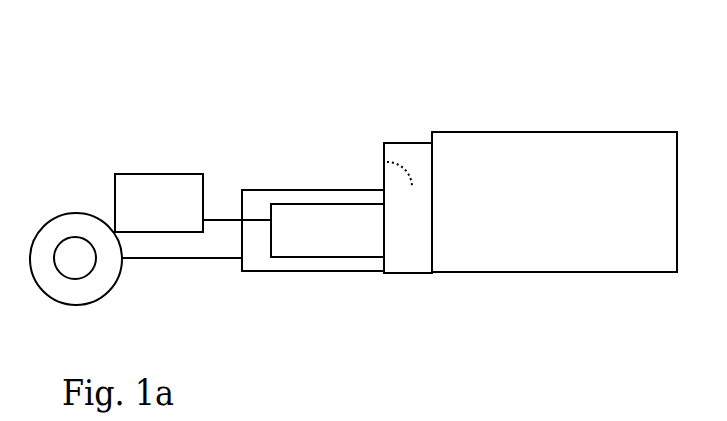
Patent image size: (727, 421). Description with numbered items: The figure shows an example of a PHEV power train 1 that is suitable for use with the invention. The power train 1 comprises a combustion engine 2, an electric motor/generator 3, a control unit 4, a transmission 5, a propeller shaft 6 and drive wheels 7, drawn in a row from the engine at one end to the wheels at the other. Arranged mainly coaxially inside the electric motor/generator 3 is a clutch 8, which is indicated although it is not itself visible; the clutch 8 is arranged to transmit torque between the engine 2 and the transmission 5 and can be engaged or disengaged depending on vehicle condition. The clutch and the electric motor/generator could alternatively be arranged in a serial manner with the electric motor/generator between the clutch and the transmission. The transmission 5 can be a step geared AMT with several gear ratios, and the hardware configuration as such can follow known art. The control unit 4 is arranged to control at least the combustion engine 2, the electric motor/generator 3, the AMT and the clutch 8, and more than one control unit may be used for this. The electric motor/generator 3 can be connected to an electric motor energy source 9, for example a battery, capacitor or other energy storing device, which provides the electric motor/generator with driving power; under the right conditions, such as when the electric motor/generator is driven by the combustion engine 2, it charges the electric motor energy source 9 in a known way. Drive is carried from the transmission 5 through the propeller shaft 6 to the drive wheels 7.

The PHEV power train 1 is at (561, 69).
The combustion engine 2 is at (595, 272).
The electric motor/generator 3 is at (407, 142).
The control unit 4 is at (328, 238).
The transmission 5 is at (319, 190).
The propeller shaft 6 is at (192, 258).
The drive wheels 7 is at (53, 228).
The clutch 8 is at (384, 163).
The electric motor energy source 9 is at (148, 173).